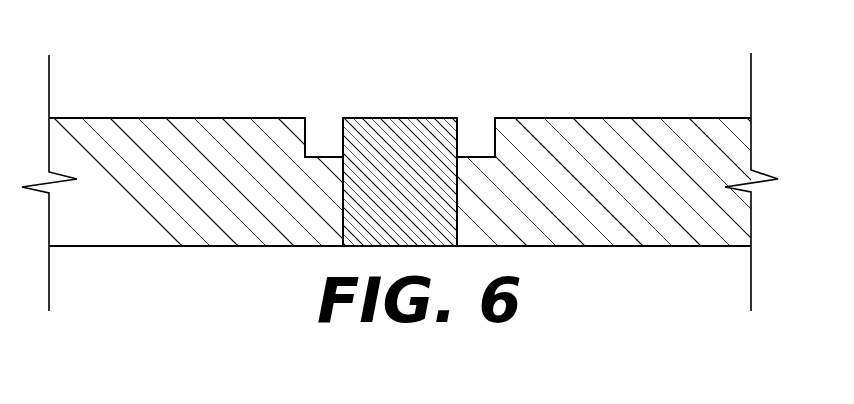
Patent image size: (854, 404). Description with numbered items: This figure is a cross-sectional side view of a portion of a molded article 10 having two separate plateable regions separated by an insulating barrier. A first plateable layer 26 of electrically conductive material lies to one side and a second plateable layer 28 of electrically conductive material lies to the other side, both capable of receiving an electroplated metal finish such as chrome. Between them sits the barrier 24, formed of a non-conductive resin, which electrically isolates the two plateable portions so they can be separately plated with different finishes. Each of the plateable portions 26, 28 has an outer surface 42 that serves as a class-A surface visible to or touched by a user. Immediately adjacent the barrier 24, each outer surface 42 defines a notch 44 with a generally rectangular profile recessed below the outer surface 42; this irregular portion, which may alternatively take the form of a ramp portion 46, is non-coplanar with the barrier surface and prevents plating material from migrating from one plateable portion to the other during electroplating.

The molded article 10 is at (70, 108).
The barrier 24 is at (395, 146).
The first plateable layer 26 is at (115, 168).
The second plateable layer 28 is at (688, 168).
The outer surface 42 is at (200, 118).
The notch 44 is at (323, 130).
The ramp portion 46 is at (425, 118).